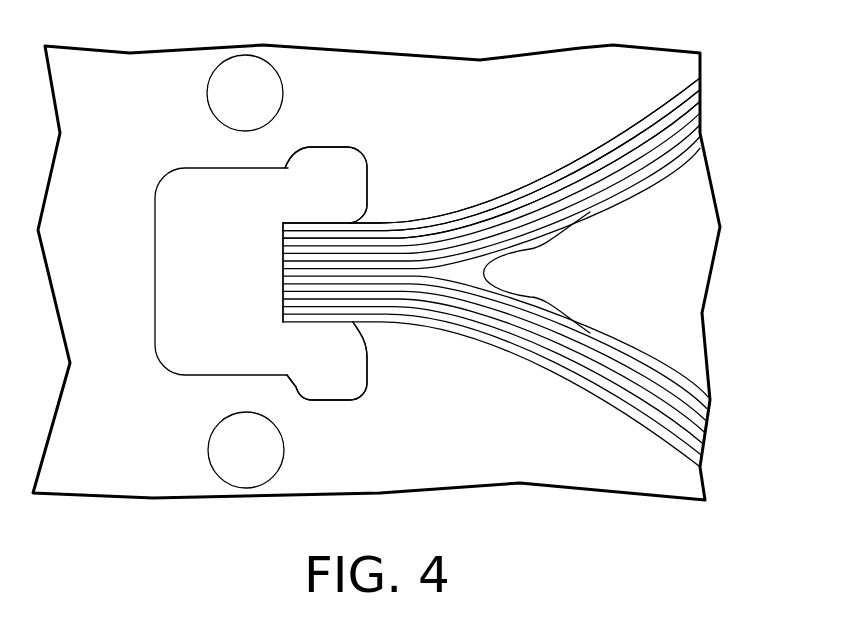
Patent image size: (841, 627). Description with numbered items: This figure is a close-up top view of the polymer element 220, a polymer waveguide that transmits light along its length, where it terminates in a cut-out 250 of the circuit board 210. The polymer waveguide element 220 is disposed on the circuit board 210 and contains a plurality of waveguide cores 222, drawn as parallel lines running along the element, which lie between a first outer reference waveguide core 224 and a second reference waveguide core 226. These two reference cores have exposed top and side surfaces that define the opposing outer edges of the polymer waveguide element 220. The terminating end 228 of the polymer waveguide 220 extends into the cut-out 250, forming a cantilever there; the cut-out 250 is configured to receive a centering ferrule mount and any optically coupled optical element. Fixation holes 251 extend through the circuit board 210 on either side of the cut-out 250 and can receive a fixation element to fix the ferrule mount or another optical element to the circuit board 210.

The circuit board 210 is at (552, 99).
The polymer element 220 is at (401, 208).
The waveguide cores 222 is at (318, 256).
The first outer reference waveguide core 224 is at (285, 326).
The second reference waveguide core 226 is at (283, 222).
The terminating end 228 is at (276, 256).
The cut-out 250 is at (182, 270).
The fixation holes 251 is at (227, 105).